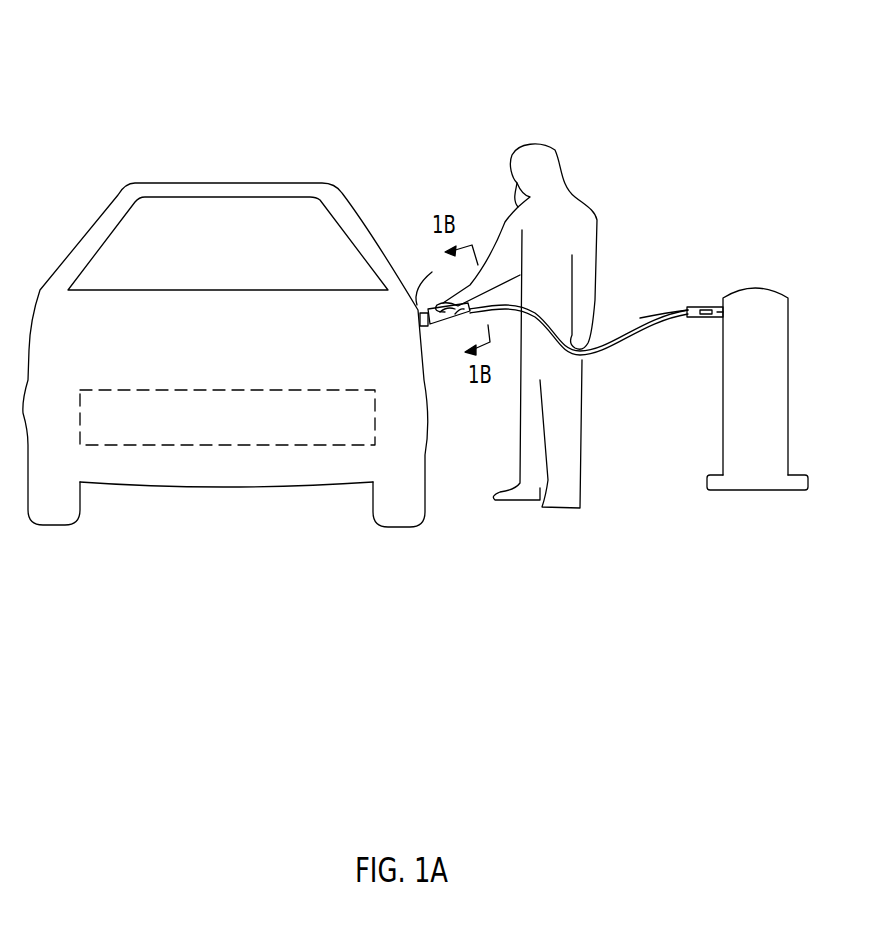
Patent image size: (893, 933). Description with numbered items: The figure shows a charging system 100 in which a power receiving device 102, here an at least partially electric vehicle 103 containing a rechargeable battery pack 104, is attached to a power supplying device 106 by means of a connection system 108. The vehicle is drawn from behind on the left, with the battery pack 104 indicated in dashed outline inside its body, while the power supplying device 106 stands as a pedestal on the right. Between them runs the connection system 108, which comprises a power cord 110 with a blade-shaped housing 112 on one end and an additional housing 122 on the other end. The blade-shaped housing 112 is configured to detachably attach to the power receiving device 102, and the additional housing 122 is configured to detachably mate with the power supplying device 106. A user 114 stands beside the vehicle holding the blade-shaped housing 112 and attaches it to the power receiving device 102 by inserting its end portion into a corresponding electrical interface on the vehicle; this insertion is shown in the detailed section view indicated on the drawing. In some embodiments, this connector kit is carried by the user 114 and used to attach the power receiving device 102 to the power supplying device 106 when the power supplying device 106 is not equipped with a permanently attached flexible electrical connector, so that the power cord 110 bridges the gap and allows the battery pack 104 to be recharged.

The charging system 100 is at (140, 87).
The power receiving device 102 is at (100, 227).
The at least partially electric vehicle 103 is at (145, 468).
The rechargeable battery pack 104 is at (292, 425).
The power supplying device 106 is at (772, 312).
The connection system 108 is at (625, 368).
The power cord 110 is at (643, 307).
The blade-shaped housing 112 is at (432, 327).
The user 114 is at (565, 422).
The additional housing 122 is at (702, 307).